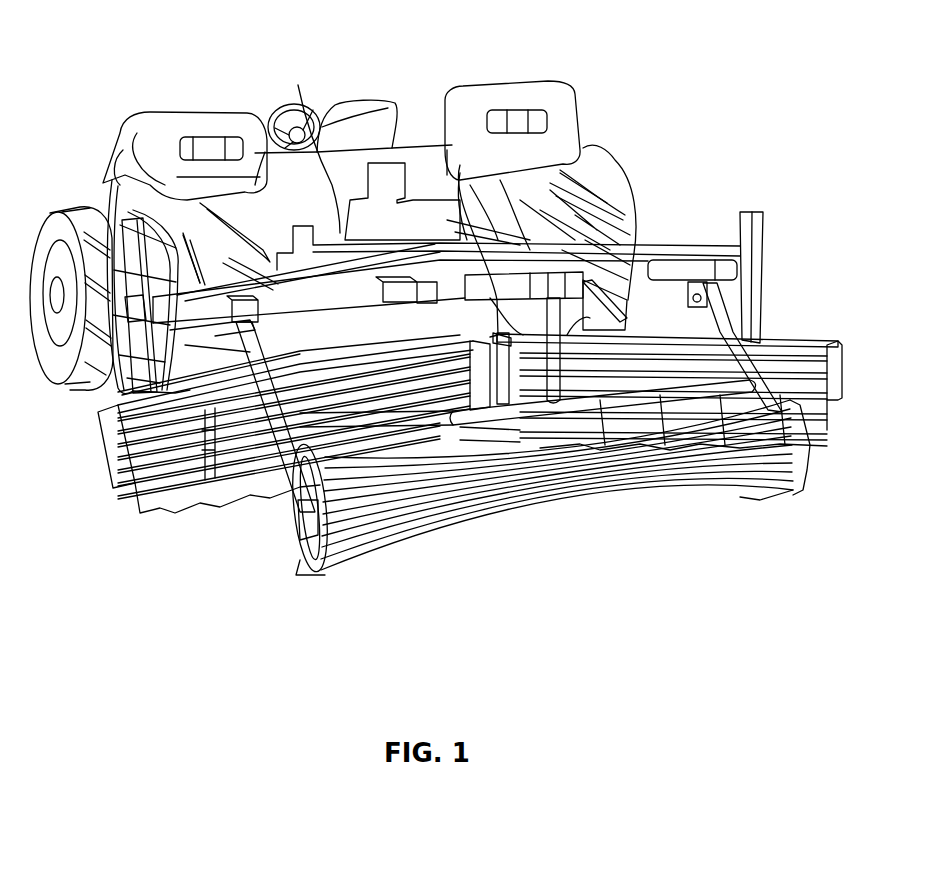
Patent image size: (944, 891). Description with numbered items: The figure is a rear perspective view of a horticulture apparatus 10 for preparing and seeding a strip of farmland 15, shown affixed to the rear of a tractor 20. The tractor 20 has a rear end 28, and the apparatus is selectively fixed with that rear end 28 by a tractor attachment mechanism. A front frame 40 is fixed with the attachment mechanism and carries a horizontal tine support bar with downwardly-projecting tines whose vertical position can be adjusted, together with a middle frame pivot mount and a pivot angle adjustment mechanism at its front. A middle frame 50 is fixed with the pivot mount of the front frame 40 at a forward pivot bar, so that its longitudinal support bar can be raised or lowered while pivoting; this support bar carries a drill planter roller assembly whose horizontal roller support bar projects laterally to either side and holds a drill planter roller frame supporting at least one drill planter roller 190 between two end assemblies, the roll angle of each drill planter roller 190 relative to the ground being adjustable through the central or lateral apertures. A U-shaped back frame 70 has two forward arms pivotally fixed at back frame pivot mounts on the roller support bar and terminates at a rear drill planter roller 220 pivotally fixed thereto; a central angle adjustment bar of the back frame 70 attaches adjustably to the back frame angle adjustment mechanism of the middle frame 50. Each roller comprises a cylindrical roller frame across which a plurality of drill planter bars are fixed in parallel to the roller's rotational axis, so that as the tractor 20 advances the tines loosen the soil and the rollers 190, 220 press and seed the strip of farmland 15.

The horticulture apparatus 10 is at (703, 77).
The strip of farmland 15 is at (565, 561).
The tractor 20 is at (373, 103).
The rear end 28 is at (473, 217).
The front frame 40 is at (315, 150).
The middle frame 50 is at (137, 187).
The U-shaped back frame 70 is at (347, 432).
The drill planter roller 190 is at (157, 513).
The rear drill planter roller 220 is at (392, 508).